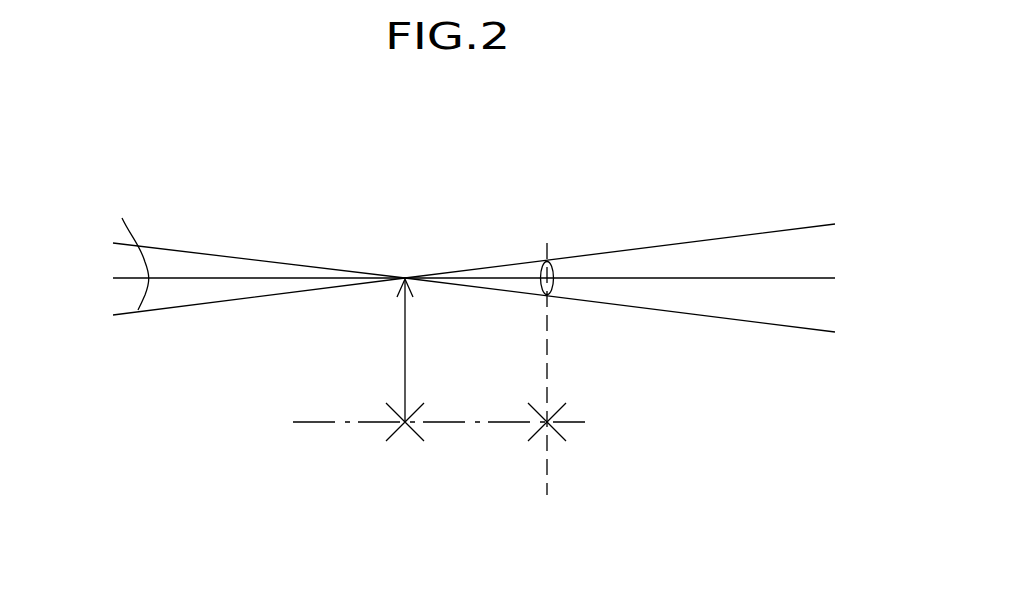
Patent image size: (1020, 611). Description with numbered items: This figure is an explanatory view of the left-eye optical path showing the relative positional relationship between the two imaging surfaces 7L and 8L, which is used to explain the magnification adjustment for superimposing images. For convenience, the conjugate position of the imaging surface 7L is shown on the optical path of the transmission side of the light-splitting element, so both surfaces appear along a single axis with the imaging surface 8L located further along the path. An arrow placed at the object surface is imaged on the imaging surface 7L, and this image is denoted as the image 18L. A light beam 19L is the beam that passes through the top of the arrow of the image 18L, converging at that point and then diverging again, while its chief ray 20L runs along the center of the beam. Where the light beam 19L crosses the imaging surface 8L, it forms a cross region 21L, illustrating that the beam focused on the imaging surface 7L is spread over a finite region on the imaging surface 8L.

The light beam 19L is at (175, 251).
The cross region 21L is at (545, 262).
The chief ray 20L is at (712, 278).
The image 18L is at (403, 350).
The imaging surface 7L is at (405, 423).
The imaging surface 8L is at (547, 422).